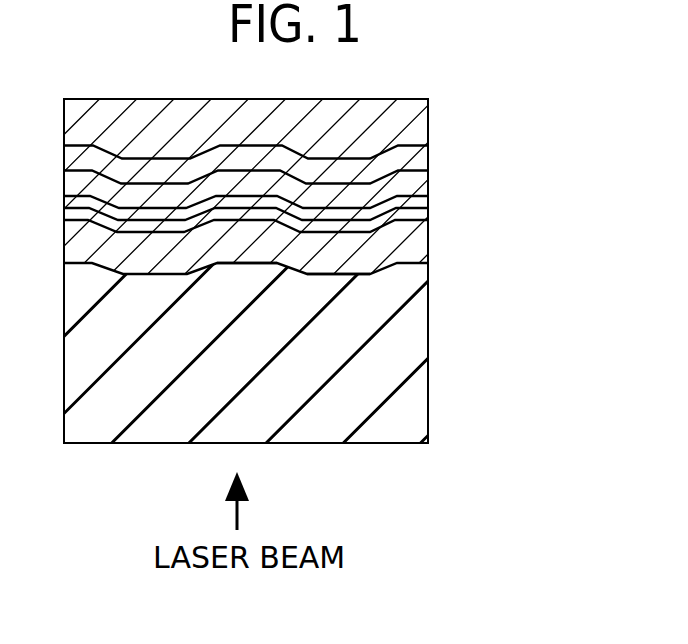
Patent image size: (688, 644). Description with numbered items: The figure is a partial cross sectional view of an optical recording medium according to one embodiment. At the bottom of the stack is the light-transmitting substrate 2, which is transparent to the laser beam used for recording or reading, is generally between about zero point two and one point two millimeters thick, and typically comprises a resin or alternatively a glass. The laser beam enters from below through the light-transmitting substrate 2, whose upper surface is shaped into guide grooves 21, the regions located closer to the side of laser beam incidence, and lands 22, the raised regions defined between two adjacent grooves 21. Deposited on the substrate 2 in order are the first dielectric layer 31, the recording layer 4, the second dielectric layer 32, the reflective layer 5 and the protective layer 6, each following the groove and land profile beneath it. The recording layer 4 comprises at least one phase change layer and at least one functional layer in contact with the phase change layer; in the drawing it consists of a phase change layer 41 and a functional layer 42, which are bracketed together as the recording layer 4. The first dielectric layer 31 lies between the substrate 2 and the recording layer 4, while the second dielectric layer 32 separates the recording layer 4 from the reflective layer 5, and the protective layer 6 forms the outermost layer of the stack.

The light-transmitting substrate 2 is at (423, 347).
The grooves 21 is at (307, 275).
The lands 22 is at (245, 263).
The first dielectric layer 31 is at (429, 243).
The recording layer 4 is at (304, 190).
The phase change layer 41 is at (429, 218).
The functional layer 42 is at (429, 205).
The second dielectric layer 32 is at (429, 185).
The reflective layer 5 is at (429, 157).
The protective layer 6 is at (429, 122).